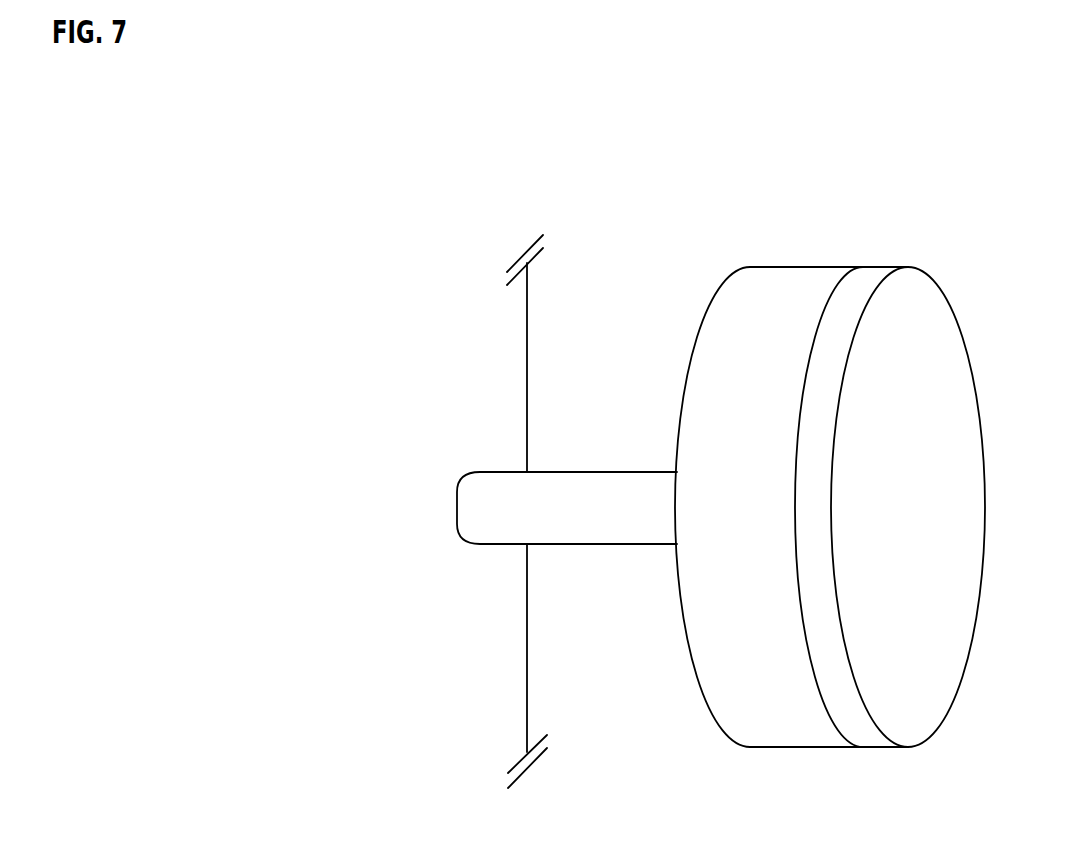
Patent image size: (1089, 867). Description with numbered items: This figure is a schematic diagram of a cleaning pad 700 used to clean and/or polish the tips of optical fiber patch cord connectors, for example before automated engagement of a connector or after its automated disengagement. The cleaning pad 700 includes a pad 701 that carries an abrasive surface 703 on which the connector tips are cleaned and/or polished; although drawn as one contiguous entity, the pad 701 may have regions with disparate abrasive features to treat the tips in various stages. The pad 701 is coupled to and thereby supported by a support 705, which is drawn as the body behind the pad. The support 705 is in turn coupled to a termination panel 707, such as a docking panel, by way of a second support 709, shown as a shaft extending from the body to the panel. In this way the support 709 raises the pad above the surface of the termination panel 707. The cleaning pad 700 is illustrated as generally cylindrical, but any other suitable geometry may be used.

The cleaning pad 700 is at (1000, 206).
The pad 701 is at (872, 740).
The abrasive surface 703 is at (962, 458).
The support 705 is at (795, 740).
The termination panel 707 is at (510, 416).
The support 709 is at (598, 532).